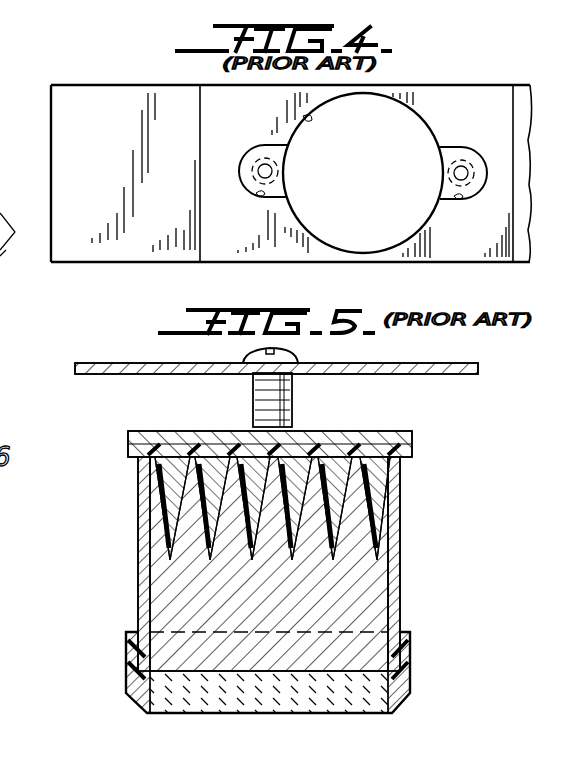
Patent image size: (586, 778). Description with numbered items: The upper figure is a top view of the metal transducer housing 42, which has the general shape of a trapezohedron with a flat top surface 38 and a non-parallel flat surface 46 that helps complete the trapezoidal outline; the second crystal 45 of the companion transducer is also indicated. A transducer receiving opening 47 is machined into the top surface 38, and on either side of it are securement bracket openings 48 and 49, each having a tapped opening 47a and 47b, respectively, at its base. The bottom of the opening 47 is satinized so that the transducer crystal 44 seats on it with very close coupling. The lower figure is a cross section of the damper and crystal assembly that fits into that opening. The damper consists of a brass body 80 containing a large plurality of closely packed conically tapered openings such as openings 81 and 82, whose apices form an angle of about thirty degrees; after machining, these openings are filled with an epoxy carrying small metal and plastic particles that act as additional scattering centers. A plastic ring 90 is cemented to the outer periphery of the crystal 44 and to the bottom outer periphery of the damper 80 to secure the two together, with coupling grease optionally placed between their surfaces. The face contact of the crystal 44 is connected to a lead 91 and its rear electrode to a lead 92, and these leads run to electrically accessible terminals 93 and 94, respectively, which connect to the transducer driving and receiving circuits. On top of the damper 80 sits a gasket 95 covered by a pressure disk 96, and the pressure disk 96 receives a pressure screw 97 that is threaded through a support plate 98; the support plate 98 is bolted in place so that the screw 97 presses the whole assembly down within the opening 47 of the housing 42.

In FIG. 4, the top surface 38 is at (490, 115).
In FIG. 4, the housing 42 is at (458, 66).
In FIG. 5, the transducer crystal 44 is at (258, 703).
In FIG. 4, the transducer crystal 45 is at (120, 58).
In FIG. 4, the non-parallel flat surface 46 is at (522, 243).
In FIG. 4, the transducer receiving opening 47 is at (306, 118).
In FIG. 4, the tapped opening 47a is at (258, 168).
In FIG. 4, the tapped opening 47b is at (463, 170).
In FIG. 4, the securement bracket opening 48 is at (262, 192).
In FIG. 4, the securement bracket opening 49 is at (458, 203).
In FIG. 5, the brass body 80 is at (170, 595).
In FIG. 5, the conically tapered opening 81 is at (163, 505).
In FIG. 5, the conically tapered opening 82 is at (380, 511).
In FIG. 5, the plastic ring 90 is at (410, 672).
In FIG. 5, the lead 91 is at (400, 576).
In FIG. 5, the lead 92 is at (140, 548).
In FIG. 5, the terminal 93 is at (397, 431).
In FIG. 5, the terminal 94 is at (145, 431).
In FIG. 5, the gasket 95 is at (412, 456).
In FIG. 5, the pressure disk 96 is at (226, 400).
In FIG. 5, the pressure screw 97 is at (292, 414).
In FIG. 5, the support plate 98 is at (400, 364).